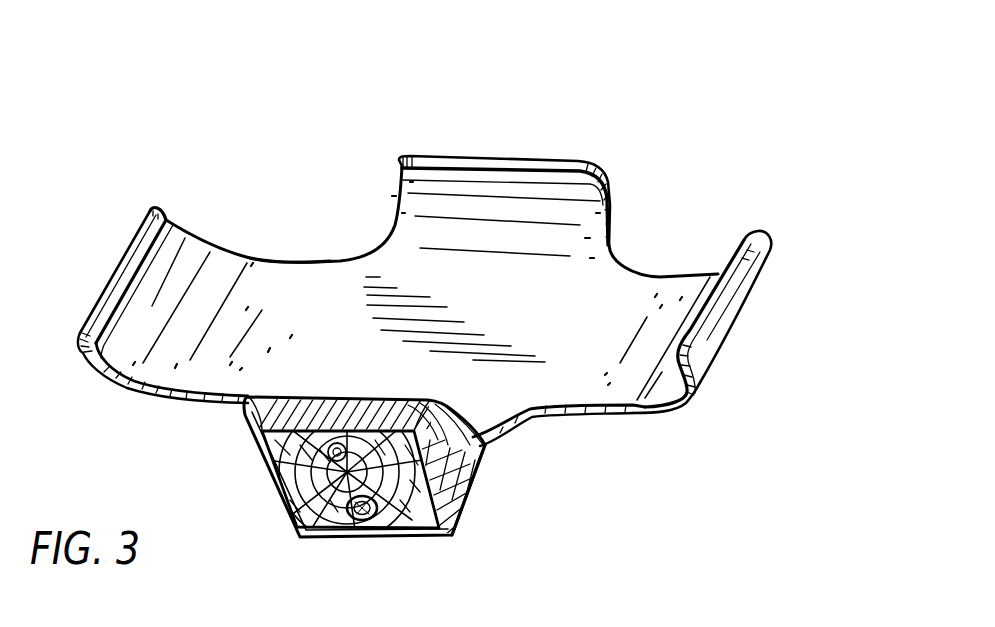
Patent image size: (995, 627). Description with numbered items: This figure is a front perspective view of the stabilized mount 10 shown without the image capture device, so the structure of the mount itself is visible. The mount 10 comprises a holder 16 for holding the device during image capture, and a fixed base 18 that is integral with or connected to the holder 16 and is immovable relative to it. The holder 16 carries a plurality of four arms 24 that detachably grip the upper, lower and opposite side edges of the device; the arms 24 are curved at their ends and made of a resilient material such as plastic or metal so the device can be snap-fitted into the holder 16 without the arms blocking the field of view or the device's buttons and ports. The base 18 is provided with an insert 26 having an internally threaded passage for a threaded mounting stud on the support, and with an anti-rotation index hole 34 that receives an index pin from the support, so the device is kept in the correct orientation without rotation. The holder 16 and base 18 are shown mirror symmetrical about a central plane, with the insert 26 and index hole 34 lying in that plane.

The stabilized mount 10 is at (641, 225).
The holder 16 is at (284, 262).
The fixed base 18 is at (463, 487).
The arms 24 is at (105, 288).
The insert 26 is at (362, 520).
The anti-rotation index hole 34 is at (268, 458).